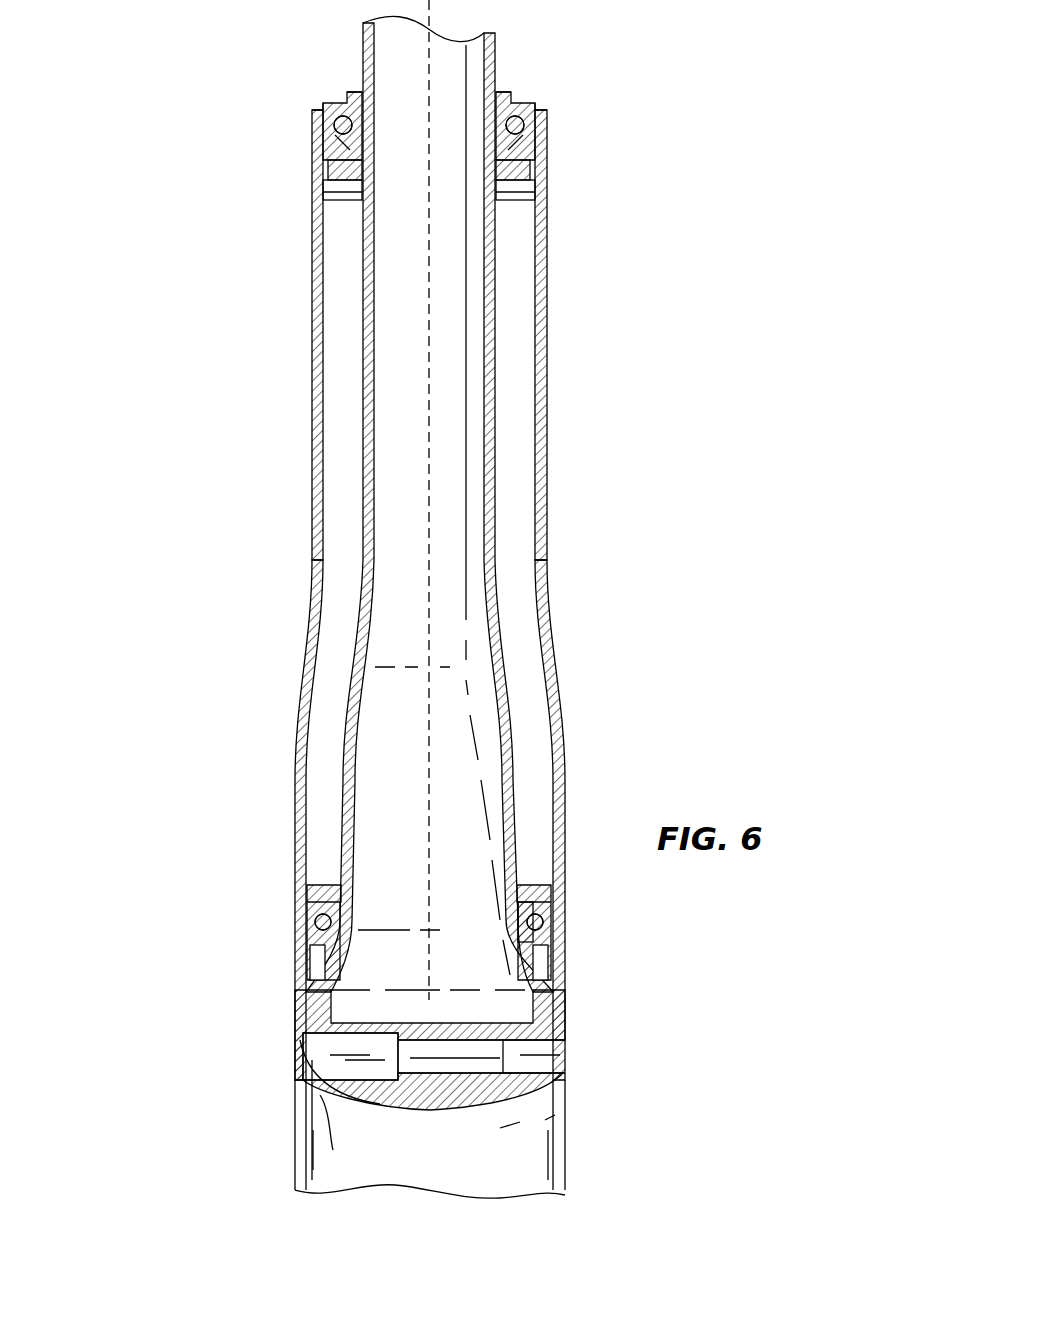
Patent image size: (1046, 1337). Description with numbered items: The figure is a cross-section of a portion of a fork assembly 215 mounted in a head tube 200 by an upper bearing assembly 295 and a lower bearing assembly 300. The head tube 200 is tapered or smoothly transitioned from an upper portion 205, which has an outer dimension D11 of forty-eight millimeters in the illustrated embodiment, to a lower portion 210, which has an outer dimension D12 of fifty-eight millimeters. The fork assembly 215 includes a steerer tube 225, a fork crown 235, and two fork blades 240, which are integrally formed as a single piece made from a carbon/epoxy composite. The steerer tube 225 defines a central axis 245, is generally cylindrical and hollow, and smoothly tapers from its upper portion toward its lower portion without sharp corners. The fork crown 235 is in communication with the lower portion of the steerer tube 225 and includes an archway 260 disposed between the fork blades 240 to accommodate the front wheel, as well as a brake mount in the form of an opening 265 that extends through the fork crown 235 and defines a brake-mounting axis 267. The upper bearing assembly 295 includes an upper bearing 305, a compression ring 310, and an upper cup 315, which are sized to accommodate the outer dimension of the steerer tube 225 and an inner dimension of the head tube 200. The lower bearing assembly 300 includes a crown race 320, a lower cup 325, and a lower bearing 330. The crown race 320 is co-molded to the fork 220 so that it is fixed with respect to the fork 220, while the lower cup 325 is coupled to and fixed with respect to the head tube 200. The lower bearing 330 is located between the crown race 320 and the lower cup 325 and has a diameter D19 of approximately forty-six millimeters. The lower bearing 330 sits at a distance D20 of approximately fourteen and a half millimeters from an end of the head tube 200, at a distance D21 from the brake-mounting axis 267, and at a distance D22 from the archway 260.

The head tube 200 is at (479, 654).
The upper portion 205 is at (549, 288).
The lower portion 210 is at (565, 810).
The fork assembly 215 is at (123, 1053).
The fork 220 is at (565, 1017).
The steerer tube 225 is at (495, 410).
The fork crown 235 is at (295, 1012).
The fork blades 240 is at (540, 1135).
The central axis 245 is at (424, 262).
The archway 260 is at (430, 1110).
The opening 265 is at (342, 1067).
The brake-mounting axis 267 is at (640, 1062).
The upper bearing assembly 295 is at (273, 53).
The lower bearing assembly 300 is at (538, 862).
The upper bearing 305 is at (509, 104).
The compression ring 310 is at (497, 92).
The upper cup 315 is at (530, 215).
The crown race 320 is at (565, 947).
The lower cup 325 is at (299, 880).
The lower bearing 330 is at (318, 938).
The outer dimension D11 is at (253, 162).
The outer dimension D12 is at (237, 898).
The diameter D19 is at (529, 885).
The distance D20 is at (905, 924).
The distance D21 is at (187, 1058).
The distance D22 is at (565, 1113).